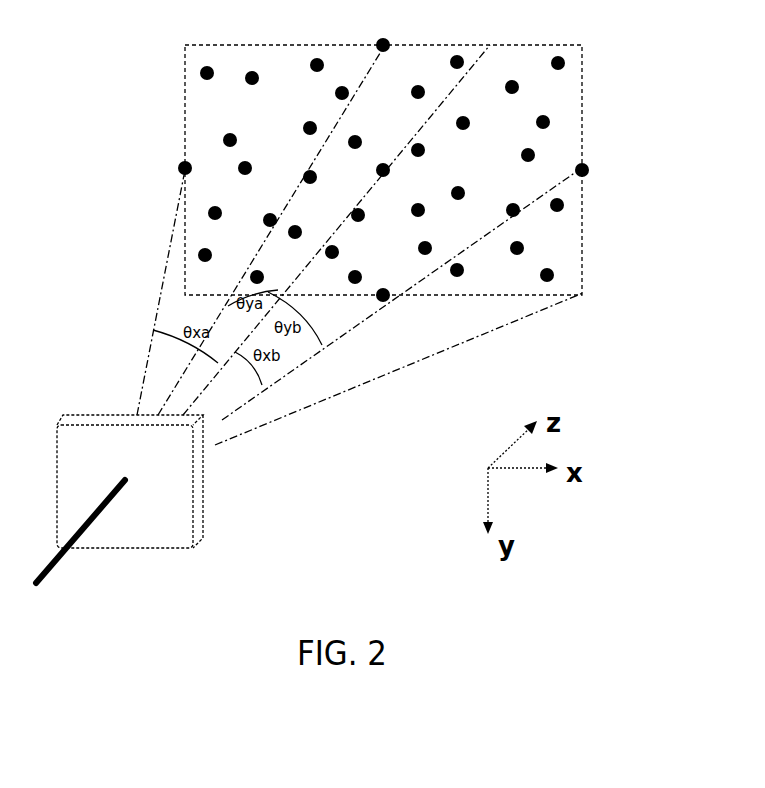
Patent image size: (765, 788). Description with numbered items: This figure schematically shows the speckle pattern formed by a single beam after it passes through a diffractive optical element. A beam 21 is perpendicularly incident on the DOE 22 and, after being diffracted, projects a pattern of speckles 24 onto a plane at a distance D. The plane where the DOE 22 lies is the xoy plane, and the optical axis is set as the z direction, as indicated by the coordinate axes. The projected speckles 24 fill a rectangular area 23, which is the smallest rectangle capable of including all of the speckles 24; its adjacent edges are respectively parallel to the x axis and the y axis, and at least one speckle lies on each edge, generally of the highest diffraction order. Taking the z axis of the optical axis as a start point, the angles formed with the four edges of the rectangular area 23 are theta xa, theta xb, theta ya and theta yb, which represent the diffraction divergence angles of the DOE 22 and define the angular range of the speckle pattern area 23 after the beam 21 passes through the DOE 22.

The beam 21 is at (45, 578).
The DOE 22 is at (195, 510).
The rectangular area 23 is at (583, 88).
The speckle 24 is at (560, 207).